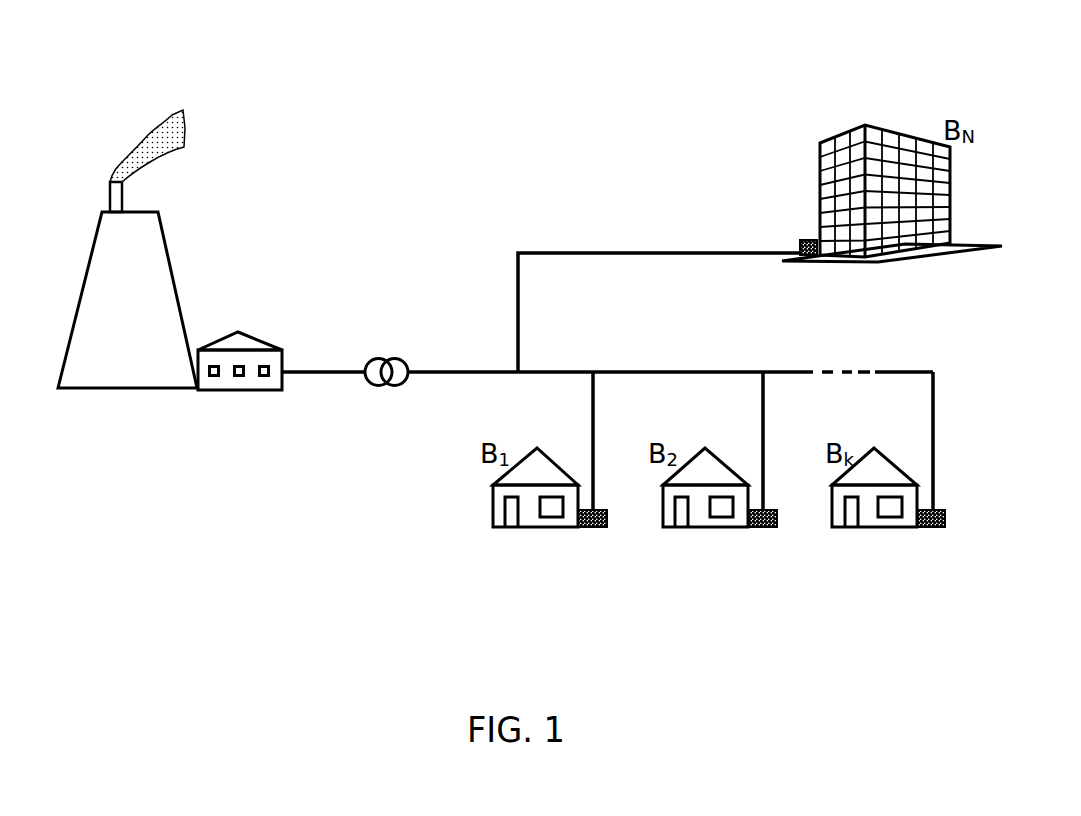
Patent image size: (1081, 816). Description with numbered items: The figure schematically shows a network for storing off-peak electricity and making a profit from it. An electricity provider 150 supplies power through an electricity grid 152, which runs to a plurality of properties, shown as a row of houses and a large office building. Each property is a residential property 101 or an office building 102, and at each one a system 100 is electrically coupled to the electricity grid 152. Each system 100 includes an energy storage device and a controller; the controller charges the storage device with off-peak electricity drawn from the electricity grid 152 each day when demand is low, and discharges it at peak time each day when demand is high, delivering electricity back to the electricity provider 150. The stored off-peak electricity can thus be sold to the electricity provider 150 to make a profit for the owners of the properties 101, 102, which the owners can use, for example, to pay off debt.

The system 100 is at (800, 247).
The property 101 is at (503, 520).
The office building 102 is at (948, 218).
The electricity provider 150 is at (253, 332).
The electricity grid 152 is at (390, 360).